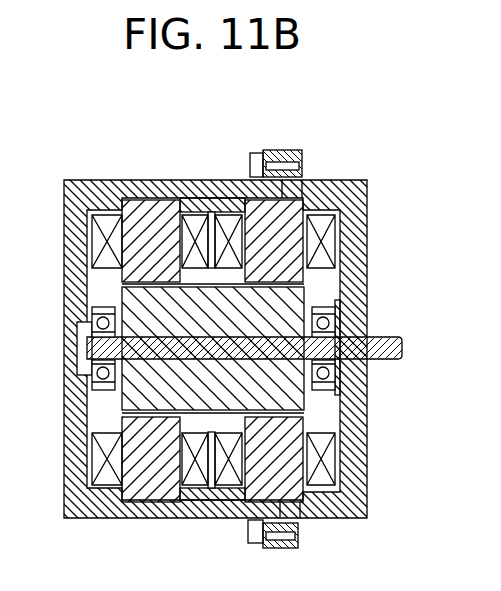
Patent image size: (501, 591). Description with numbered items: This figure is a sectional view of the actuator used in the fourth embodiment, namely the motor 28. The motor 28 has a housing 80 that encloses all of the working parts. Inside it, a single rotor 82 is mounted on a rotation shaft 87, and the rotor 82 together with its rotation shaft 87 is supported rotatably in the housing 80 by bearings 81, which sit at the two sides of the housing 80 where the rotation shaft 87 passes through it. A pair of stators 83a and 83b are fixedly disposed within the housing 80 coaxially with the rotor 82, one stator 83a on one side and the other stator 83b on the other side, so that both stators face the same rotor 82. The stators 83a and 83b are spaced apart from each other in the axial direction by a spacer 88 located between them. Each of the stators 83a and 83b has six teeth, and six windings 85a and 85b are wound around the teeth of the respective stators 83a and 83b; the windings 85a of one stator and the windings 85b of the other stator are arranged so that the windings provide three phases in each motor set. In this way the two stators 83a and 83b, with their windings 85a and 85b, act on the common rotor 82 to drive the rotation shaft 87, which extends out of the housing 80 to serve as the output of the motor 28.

The motor 28 is at (355, 142).
The housing 80 is at (125, 198).
The bearings 81 is at (90, 318).
The rotor 82 is at (285, 313).
The stator 83a is at (143, 490).
The stator 83b is at (288, 482).
The windings 85a is at (97, 468).
The windings 85b is at (322, 460).
The rotation shaft 87 is at (390, 362).
The spacer 88 is at (208, 496).